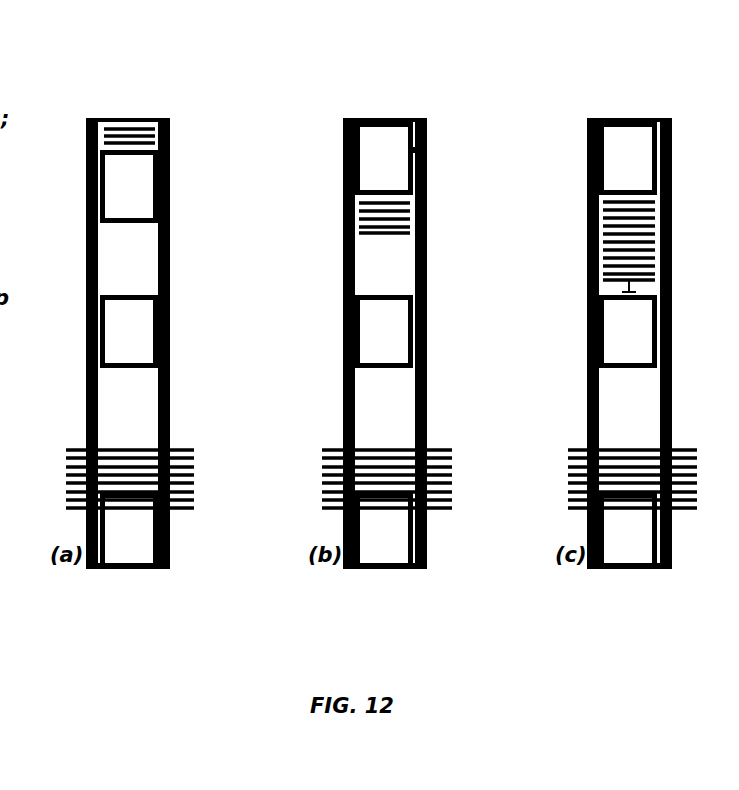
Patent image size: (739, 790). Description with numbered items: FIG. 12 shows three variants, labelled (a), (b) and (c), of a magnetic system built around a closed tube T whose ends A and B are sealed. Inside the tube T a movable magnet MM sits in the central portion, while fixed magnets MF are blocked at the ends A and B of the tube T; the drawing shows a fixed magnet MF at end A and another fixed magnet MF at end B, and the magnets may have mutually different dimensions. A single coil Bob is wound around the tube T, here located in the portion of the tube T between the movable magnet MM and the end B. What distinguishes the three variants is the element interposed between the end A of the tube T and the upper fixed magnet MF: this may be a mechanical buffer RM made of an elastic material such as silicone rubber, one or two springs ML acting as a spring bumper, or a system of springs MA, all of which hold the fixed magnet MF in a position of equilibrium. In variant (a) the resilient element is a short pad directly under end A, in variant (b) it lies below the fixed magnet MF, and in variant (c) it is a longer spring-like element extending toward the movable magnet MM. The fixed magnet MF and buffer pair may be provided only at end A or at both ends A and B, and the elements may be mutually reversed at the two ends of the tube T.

The end of tube A is at (116, 117).
The end of tube B is at (126, 571).
The tube T is at (112, 254).
The movable magnet MM is at (125, 310).
The fixed magnet MF is at (170, 197).
The coil Bob is at (78, 460).
The mechanical buffer RM is at (379, 184).
The spring bumper ML is at (379, 184).
The spring system MA is at (162, 133).